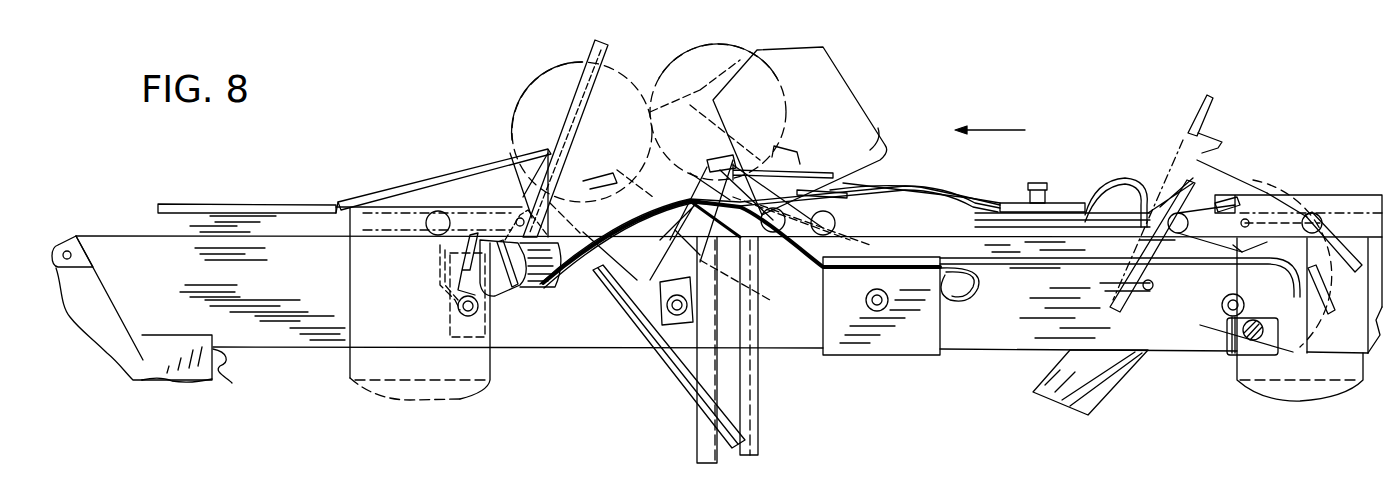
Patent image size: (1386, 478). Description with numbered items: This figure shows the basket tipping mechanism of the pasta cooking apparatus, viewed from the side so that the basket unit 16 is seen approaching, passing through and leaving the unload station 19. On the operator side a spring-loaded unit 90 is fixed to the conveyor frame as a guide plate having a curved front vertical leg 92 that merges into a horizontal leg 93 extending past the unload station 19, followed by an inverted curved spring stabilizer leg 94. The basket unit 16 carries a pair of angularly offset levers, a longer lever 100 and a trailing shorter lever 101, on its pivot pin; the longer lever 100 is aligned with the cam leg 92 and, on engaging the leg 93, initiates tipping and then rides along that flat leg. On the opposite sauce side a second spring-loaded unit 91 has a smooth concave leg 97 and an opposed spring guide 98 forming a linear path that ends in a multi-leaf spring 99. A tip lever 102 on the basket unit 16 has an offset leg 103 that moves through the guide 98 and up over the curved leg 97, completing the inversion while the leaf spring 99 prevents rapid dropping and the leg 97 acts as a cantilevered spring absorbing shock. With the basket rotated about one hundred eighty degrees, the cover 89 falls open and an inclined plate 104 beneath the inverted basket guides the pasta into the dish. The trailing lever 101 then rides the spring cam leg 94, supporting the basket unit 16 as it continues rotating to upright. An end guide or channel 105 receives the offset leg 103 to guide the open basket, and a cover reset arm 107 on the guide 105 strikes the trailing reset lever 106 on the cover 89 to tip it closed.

The basket unit 16 is at (848, 83).
The unload station 19 is at (795, 267).
The cover 89 is at (682, 395).
The spring-loaded unit 90 is at (861, 306).
The second spring-loaded unit 91 is at (900, 173).
The front vertical leg 92 is at (1295, 283).
The horizontal leg 93 is at (1000, 268).
The spring stabilizer leg 94 is at (653, 238).
The concave leg 97 is at (935, 213).
The spring guide 98 is at (1067, 203).
The multi-leaf spring 99 is at (878, 150).
The longer lever 100 is at (1232, 263).
The shorter lever 101 is at (1228, 247).
The tip lever 102 is at (1160, 278).
The offset leg 103 is at (833, 183).
The inclined plate 104 is at (1135, 358).
The end guide 105 is at (455, 170).
The reset lever 106 is at (527, 310).
The cover reset arm 107 is at (514, 294).